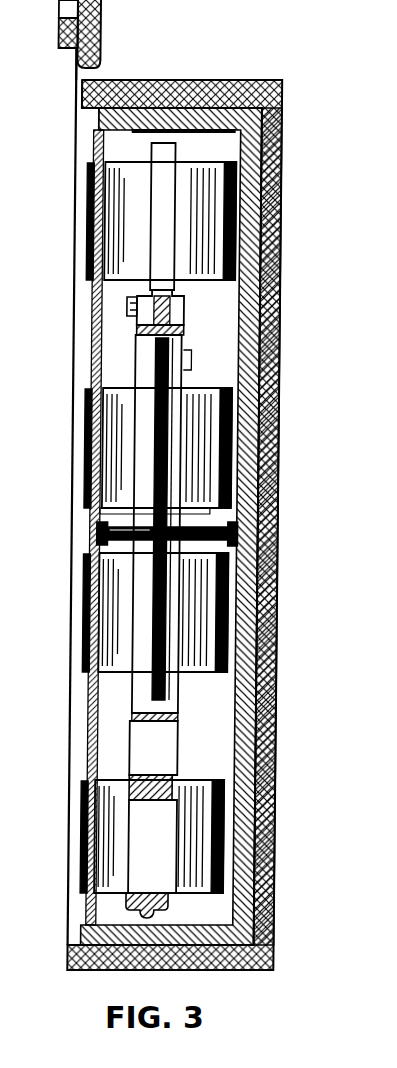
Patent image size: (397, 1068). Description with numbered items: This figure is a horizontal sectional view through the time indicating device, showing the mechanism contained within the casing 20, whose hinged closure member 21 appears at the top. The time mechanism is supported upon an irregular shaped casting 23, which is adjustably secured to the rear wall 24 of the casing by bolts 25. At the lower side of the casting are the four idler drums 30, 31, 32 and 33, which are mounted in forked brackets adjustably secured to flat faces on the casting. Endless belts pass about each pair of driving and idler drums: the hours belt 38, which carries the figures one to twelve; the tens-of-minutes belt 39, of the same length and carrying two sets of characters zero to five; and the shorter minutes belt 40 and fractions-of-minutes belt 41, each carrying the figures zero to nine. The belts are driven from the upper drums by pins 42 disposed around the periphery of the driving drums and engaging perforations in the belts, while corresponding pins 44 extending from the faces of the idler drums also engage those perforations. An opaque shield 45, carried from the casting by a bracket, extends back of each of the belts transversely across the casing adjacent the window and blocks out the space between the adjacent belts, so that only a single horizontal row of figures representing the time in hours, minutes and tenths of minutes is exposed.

The casing 20 is at (217, 108).
The hinged closure member 21 is at (99, 34).
The casting 23 is at (168, 741).
The rear wall 24 is at (240, 494).
The bolts 25 is at (214, 528).
The idler drum 30 is at (124, 193).
The idler drum 31 is at (124, 430).
The idler drum 32 is at (122, 590).
The idler drum 33 is at (88, 810).
The hours belt 38 is at (88, 260).
The tens-of-minutes belt 39 is at (88, 488).
The minutes belt 40 is at (88, 638).
The fractions-of-minutes belt 41 is at (88, 872).
The pins 42 is at (103, 220).
The pins 44 is at (97, 838).
The opaque shield 45 is at (88, 516).